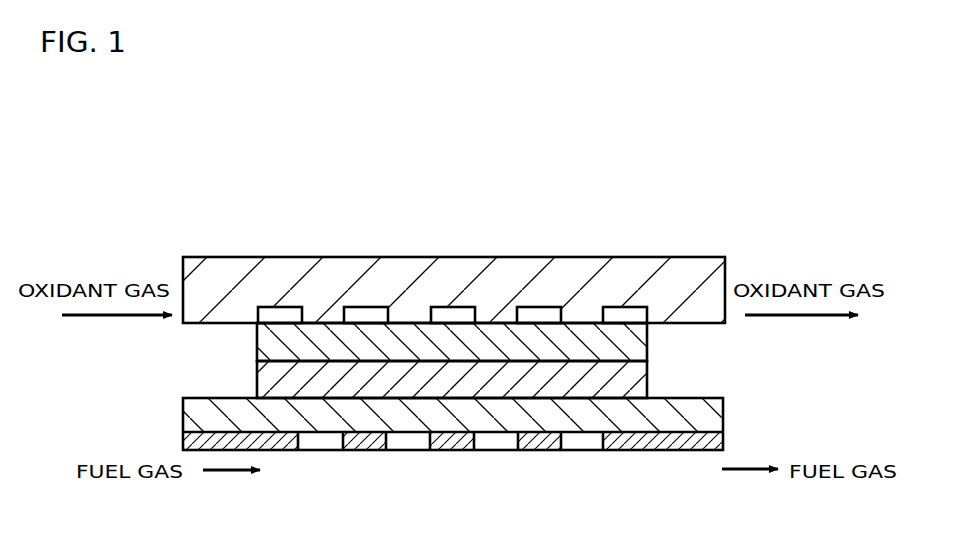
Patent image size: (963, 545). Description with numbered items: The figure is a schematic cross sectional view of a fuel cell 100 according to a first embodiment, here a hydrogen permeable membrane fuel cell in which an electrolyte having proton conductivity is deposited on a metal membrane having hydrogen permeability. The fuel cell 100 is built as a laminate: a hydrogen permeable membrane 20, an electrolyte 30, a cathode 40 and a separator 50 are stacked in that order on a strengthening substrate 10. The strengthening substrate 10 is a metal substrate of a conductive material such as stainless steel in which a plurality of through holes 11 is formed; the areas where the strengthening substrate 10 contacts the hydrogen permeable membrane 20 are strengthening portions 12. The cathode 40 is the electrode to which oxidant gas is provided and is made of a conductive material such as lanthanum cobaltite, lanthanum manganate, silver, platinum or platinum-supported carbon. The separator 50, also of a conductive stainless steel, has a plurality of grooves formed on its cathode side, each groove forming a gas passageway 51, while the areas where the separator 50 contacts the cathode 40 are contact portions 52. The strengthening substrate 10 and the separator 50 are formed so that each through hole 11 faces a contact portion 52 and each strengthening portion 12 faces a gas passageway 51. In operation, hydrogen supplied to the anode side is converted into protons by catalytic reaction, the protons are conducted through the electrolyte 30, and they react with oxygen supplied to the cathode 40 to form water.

The fuel cell 100 is at (586, 208).
The separator 50 is at (727, 268).
The gas passageway 51 is at (283, 314).
The contact portion 52 is at (333, 325).
The cathode 40 is at (637, 354).
The electrolyte 30 is at (637, 392).
The hydrogen permeable membrane 20 is at (717, 423).
The through hole 11 is at (420, 443).
The strengthening portion 12 is at (462, 443).
The strengthening substrate 10 is at (645, 498).